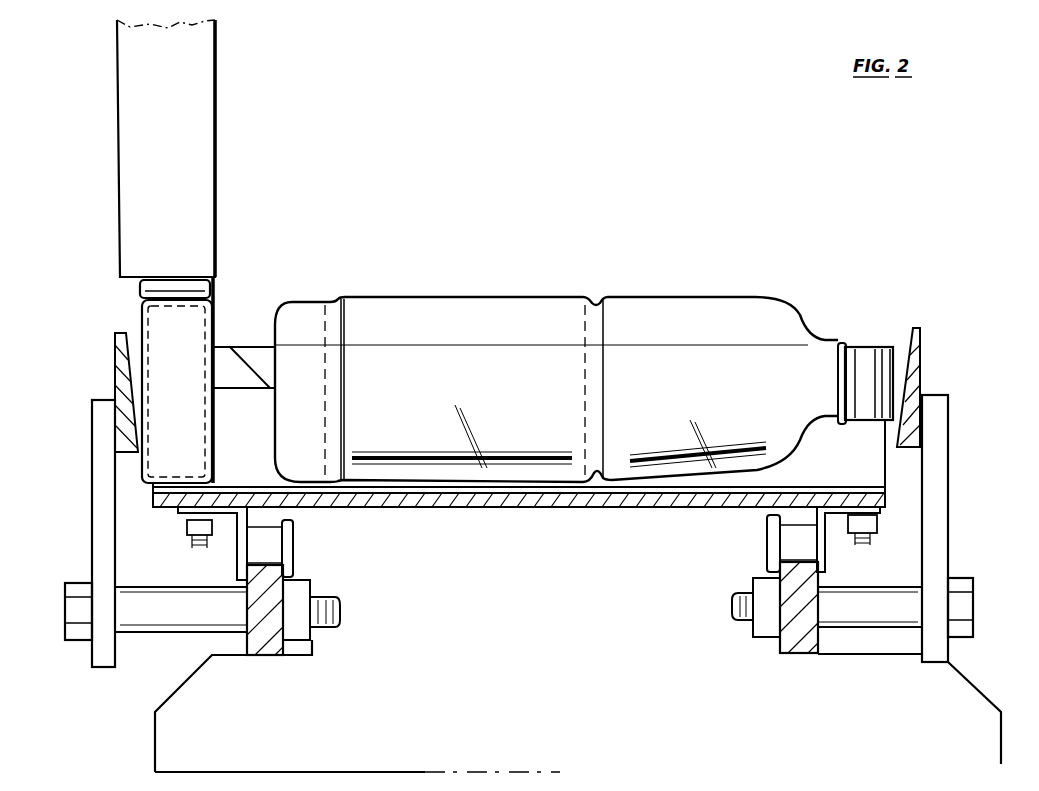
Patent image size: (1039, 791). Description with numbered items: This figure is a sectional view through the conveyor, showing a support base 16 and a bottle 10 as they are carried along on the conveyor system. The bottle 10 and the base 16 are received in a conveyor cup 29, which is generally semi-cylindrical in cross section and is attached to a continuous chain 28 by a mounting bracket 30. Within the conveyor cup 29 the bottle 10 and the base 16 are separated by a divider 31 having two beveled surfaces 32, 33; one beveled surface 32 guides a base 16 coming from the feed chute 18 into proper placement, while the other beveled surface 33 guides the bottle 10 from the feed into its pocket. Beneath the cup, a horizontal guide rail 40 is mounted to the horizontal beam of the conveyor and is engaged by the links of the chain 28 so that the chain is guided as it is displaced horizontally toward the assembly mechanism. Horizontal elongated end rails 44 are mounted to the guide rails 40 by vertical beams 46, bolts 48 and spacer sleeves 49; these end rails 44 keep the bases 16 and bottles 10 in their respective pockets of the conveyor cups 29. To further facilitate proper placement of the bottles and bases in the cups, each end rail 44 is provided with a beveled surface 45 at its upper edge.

The bottle 10 is at (662, 305).
The support base 16 is at (200, 309).
The feed chute 18 is at (205, 112).
The continuous chain 28 is at (790, 535).
The conveyor cup 29 is at (550, 507).
The mounting bracket 30 is at (826, 553).
The divider 31 is at (252, 413).
The beveled surface 32 is at (216, 346).
The beveled surface 33 is at (252, 360).
The horizontal guide rail 40 is at (798, 643).
The horizontal elongated end rail 44 is at (921, 352).
The beveled surface 45 is at (905, 328).
The vertical beam 46 is at (950, 462).
The bolt 48 is at (972, 607).
The spacer sleeve 49 is at (882, 610).